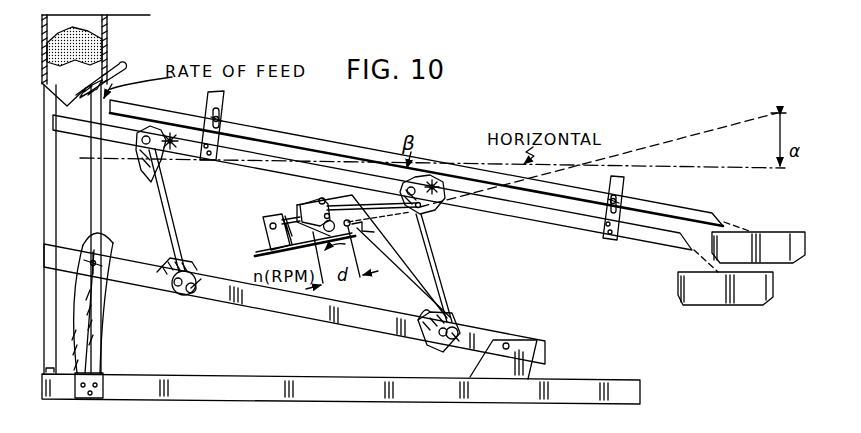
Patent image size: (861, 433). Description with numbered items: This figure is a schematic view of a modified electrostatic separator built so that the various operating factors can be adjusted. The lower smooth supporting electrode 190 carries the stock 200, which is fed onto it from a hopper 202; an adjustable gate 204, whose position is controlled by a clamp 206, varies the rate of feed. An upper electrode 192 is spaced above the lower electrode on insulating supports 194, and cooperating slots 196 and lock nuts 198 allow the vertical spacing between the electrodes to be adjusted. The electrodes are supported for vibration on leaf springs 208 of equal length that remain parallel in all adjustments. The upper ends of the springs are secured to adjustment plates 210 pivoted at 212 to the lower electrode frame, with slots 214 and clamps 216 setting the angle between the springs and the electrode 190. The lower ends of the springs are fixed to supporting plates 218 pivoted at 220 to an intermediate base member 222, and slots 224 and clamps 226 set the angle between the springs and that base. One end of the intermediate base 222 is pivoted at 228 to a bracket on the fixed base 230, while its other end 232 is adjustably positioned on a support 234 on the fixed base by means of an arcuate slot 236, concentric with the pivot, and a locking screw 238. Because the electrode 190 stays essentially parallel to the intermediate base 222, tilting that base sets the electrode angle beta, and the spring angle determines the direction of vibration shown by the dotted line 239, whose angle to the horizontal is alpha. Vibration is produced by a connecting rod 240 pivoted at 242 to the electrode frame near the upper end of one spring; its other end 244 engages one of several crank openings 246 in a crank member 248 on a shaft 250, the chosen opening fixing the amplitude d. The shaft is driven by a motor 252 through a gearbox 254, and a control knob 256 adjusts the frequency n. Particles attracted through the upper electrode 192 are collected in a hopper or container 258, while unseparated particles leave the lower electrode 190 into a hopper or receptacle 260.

The lower smooth supporting electrode 190 is at (80, 136).
The upper electrode 192 is at (323, 150).
The insulating supports 194 is at (219, 103).
The slots 196 is at (221, 153).
The lock nuts 198 is at (226, 116).
The stock 200 is at (82, 30).
The hopper 202 is at (113, 21).
The adjustable gate 204 is at (118, 61).
The clamp 206 is at (108, 86).
The leaf springs 208 is at (168, 236).
The adjustment plates 210 is at (162, 188).
The pivot 212 is at (146, 178).
The slots 214 is at (167, 158).
The clamps 216 is at (163, 133).
The supporting plates 218 is at (176, 296).
The pivot 220 is at (194, 272).
The intermediate base member 222 is at (272, 305).
The slots 224 is at (445, 347).
The clamps 226 is at (456, 322).
The pivot 228 is at (510, 342).
The fixed base 230 is at (592, 368).
The other end of intermediate support 232 is at (110, 241).
The support 234 is at (100, 352).
The arcuate slot 236 is at (100, 323).
The locking screw 238 is at (106, 290).
The dotted line 239 is at (703, 130).
The connecting rod 240 is at (424, 222).
The pivot 242 is at (422, 210).
The other end of connecting rod 244 is at (297, 207).
The crank openings 246 is at (268, 211).
The crank member 248 is at (323, 199).
The shaft 250 is at (368, 221).
The motor 252 is at (254, 252).
The gearbox 254 is at (262, 226).
The control knob 256 is at (373, 238).
The hopper or container 258 is at (772, 243).
The hopper or receptacle 260 is at (707, 295).